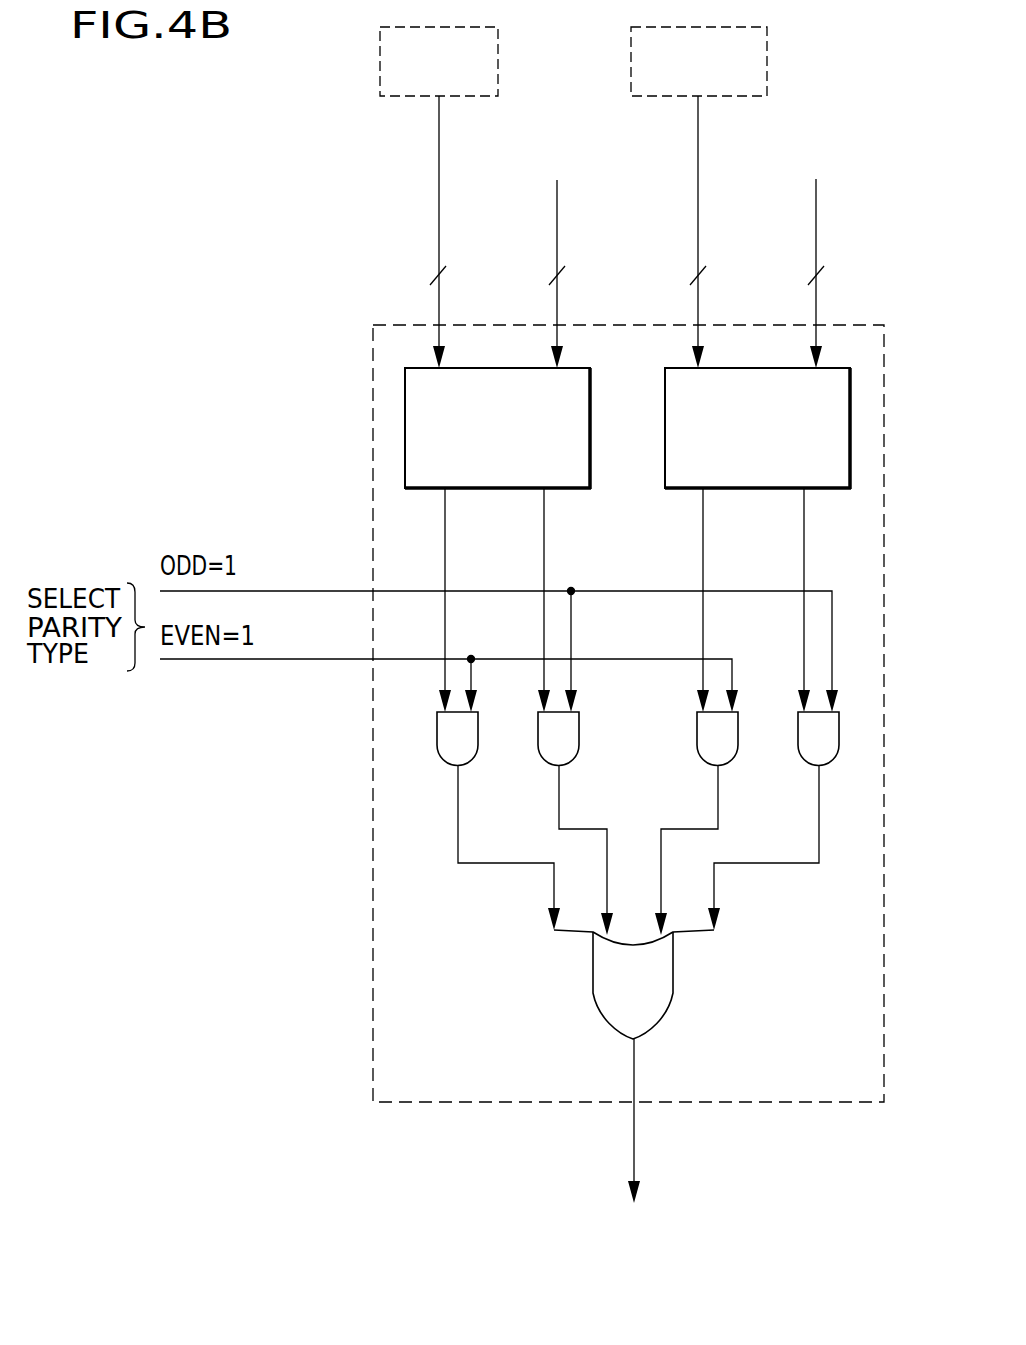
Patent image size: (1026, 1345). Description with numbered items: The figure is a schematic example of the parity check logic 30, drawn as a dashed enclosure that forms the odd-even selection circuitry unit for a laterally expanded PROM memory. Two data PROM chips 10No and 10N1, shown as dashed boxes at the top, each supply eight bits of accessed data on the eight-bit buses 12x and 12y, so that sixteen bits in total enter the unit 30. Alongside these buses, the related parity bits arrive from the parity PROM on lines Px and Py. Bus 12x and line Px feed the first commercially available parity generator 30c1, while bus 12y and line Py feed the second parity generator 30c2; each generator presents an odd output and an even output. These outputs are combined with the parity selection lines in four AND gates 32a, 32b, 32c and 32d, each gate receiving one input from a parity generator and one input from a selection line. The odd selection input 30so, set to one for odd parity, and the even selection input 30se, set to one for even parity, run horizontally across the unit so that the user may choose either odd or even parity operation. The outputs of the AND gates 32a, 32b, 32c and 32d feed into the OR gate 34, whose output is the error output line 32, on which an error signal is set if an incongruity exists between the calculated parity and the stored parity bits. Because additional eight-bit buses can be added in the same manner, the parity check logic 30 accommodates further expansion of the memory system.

The data PROM chip 10No is at (380, 52).
The data PROM chip 10N1 is at (631, 52).
The data bus 12x is at (439, 185).
The data bus 12y is at (698, 185).
The parity bit line Px is at (557, 222).
The parity bit line Py is at (816, 228).
The parity check logic 30 is at (373, 966).
The parity generator 30c1 is at (472, 419).
The parity generator 30c2 is at (732, 419).
The odd parity selection input 30so is at (265, 591).
The even parity selection input 30se is at (265, 659).
The AND gate 32a is at (443, 758).
The AND gate 32b is at (543, 758).
The AND gate 32c is at (702, 751).
The AND gate 32d is at (803, 758).
The OR gate 34 is at (673, 990).
The error output line 32 is at (634, 1138).